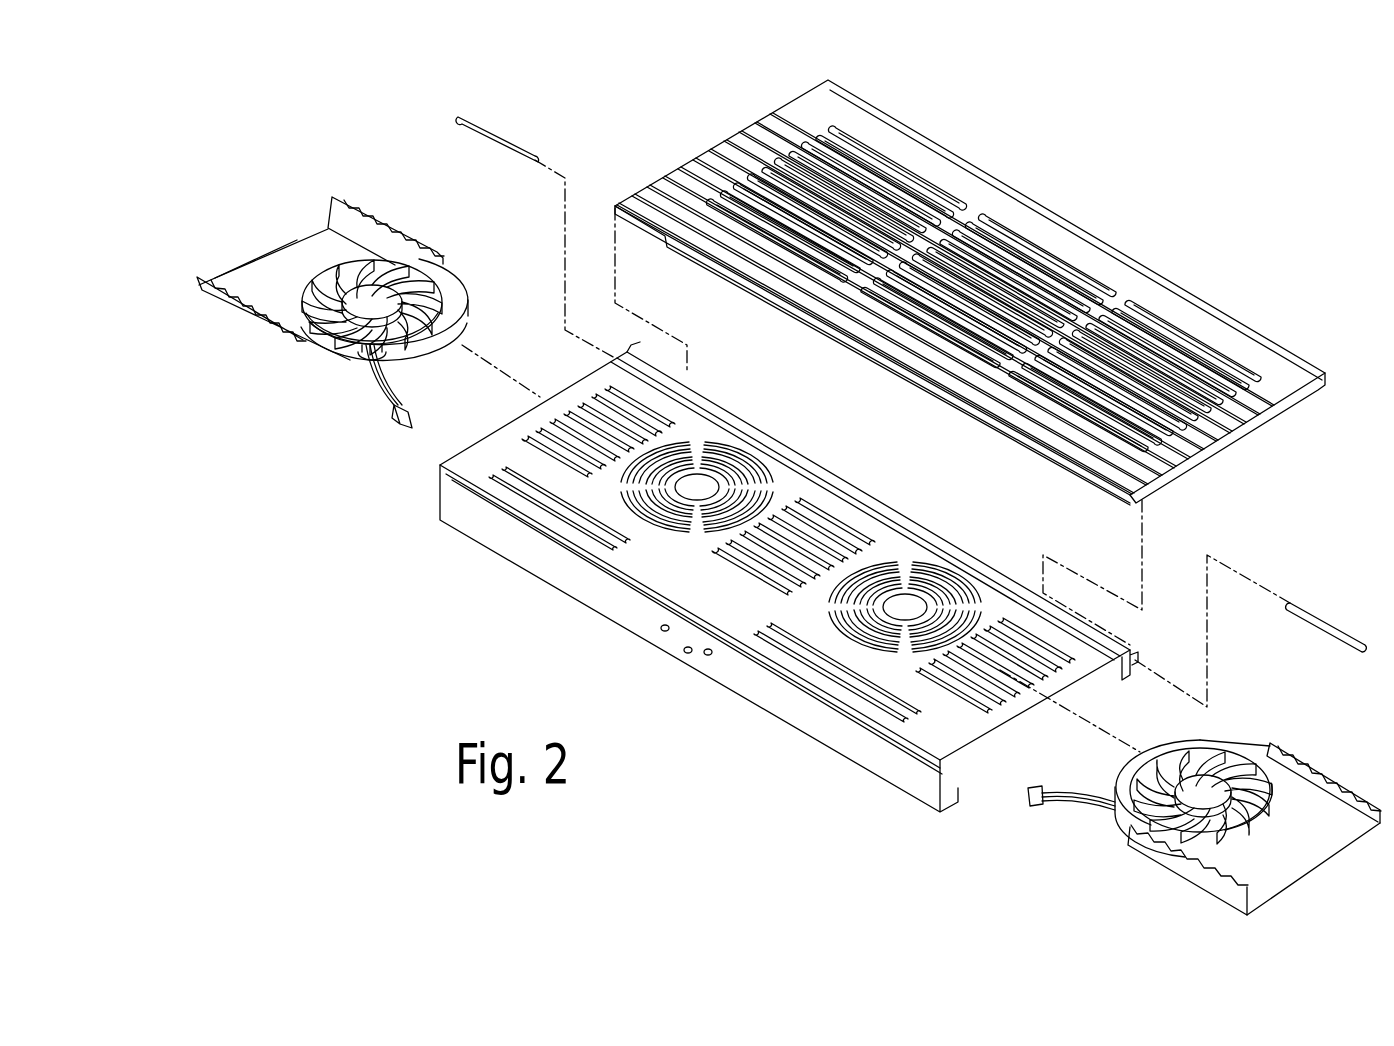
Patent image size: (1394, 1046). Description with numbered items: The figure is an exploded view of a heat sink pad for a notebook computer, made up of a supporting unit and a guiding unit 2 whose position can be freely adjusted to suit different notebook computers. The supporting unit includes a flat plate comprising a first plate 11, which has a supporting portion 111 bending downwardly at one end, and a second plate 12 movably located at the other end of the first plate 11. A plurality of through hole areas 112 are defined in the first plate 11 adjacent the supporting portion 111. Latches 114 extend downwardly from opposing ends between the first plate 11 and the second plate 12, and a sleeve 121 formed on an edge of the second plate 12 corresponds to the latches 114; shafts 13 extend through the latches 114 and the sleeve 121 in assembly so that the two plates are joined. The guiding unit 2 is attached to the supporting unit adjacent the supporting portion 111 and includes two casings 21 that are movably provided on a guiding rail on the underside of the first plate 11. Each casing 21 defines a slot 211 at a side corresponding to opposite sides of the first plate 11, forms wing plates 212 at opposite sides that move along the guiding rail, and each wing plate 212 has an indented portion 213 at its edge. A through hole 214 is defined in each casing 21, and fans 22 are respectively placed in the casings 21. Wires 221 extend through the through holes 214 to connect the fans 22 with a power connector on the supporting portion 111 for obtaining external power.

The guiding unit 2 is at (297, 294).
The first plate 11 is at (813, 598).
The supporting portion 111 is at (890, 765).
The through hole areas 112 is at (833, 617).
The latches 114 is at (1125, 665).
The second plate 12 is at (970, 292).
The sleeve 121 is at (888, 360).
The shafts 13 is at (508, 145).
The casings 21 is at (297, 265).
The slot 211 is at (300, 273).
The wing plates 212 is at (215, 300).
The indented portion 213 is at (373, 207).
The through hole 214 is at (370, 357).
The fans 22 is at (400, 288).
The wires 221 is at (380, 413).